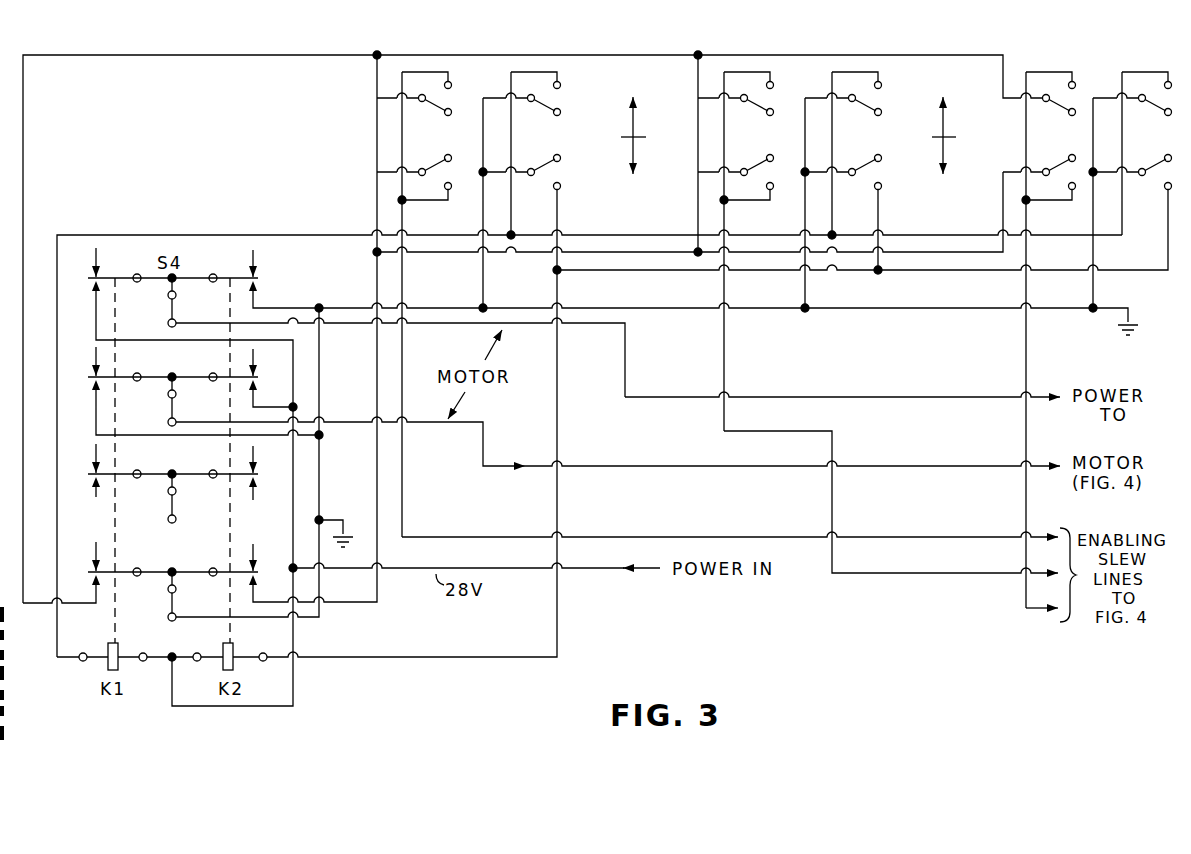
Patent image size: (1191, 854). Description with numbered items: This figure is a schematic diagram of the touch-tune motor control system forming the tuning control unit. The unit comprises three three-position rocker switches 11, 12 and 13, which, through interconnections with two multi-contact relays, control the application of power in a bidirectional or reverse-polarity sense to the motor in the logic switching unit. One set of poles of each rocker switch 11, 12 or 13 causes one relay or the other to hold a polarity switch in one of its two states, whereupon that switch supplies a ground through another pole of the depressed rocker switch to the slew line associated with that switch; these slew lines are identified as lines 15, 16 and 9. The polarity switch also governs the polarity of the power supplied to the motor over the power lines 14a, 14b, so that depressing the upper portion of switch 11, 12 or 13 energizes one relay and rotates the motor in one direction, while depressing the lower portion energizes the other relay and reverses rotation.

The three-position rocker switch 11 is at (484, 81).
The three-position rocker switch 12 is at (805, 81).
The three-position rocker switch 13 is at (1102, 81).
The motor power line 14a is at (1046, 396).
The motor power line 14b is at (1048, 464).
The slew line 15 is at (1046, 531).
The slew line 16 is at (1045, 574).
The slew line 9 is at (1045, 608).